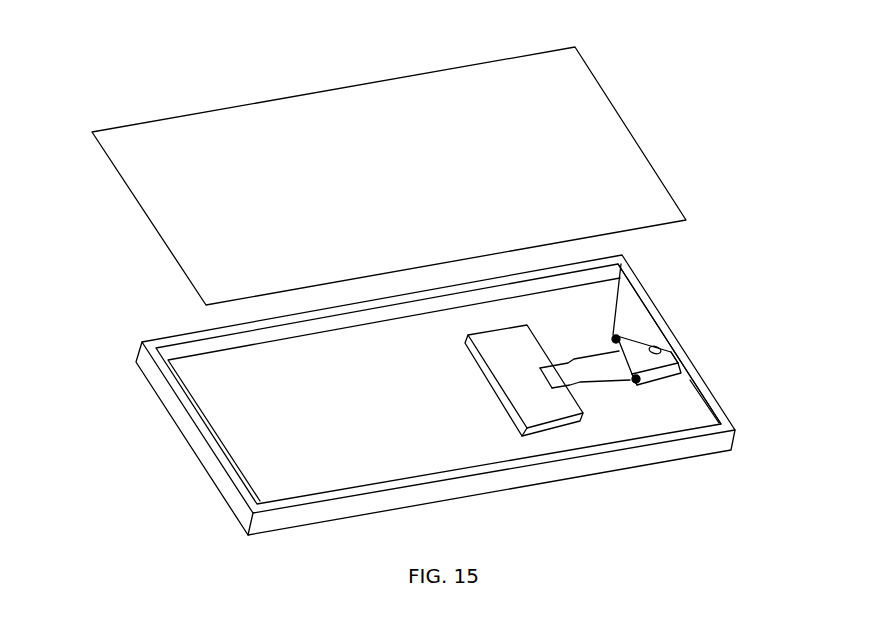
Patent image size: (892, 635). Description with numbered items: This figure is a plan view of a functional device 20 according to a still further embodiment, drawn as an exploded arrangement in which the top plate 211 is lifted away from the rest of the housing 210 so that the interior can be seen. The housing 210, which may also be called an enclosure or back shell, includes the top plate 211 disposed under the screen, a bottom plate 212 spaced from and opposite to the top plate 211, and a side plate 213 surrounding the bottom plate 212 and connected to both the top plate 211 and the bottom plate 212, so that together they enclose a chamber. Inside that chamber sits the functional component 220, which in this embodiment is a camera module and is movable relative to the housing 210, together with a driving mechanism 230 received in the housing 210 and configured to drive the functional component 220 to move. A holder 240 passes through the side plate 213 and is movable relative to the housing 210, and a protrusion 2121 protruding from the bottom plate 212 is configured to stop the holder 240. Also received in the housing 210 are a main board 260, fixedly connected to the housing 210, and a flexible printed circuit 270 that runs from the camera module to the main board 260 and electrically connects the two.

The functional device 20 is at (180, 75).
The top plate 211 is at (630, 173).
The housing 210 is at (307, 417).
The bottom plate 212 is at (667, 417).
The protrusion 2121 is at (634, 387).
The side plate 213 is at (659, 316).
The functional component 220 is at (671, 391).
The driving mechanism 230 is at (680, 369).
The holder 240 is at (676, 370).
The main board 260 is at (527, 398).
The flexible printed circuit 270 is at (590, 360).